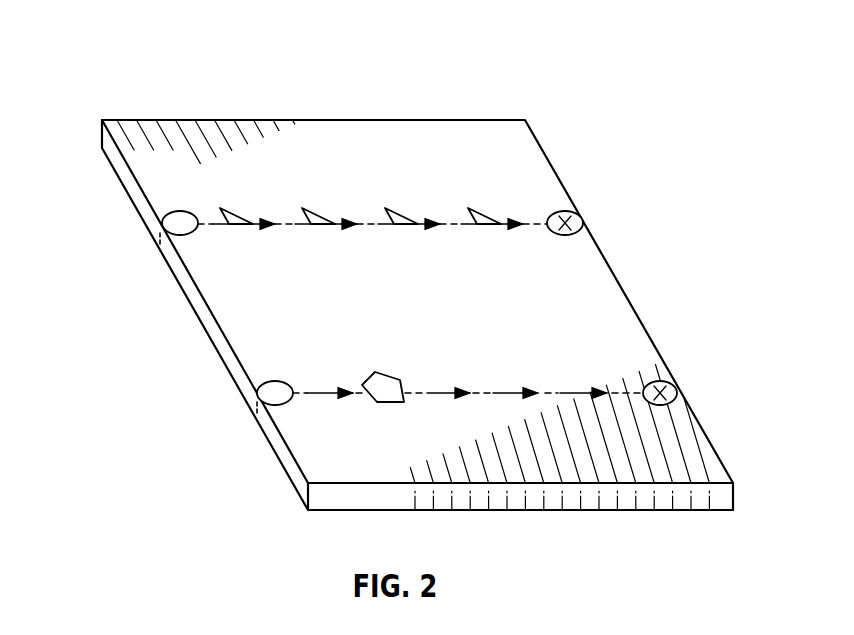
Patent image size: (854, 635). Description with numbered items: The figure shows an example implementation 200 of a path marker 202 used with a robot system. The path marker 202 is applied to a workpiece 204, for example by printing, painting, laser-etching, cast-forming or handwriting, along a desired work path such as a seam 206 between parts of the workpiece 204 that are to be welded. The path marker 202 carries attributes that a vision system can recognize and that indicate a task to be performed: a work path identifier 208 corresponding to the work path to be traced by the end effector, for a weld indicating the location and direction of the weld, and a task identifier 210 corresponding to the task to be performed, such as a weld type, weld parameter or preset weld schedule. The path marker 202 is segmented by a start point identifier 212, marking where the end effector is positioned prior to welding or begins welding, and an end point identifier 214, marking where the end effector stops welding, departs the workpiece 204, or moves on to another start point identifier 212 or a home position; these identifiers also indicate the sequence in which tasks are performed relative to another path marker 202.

The example implementation 200 is at (130, 38).
The path marker 202 is at (413, 198).
The workpiece 204 is at (197, 316).
The seam 206 is at (158, 233).
The work path identifier 208 is at (428, 228).
The task identifier 210 is at (312, 213).
The start point identifier 212 is at (170, 213).
The end point identifier 214 is at (578, 214).